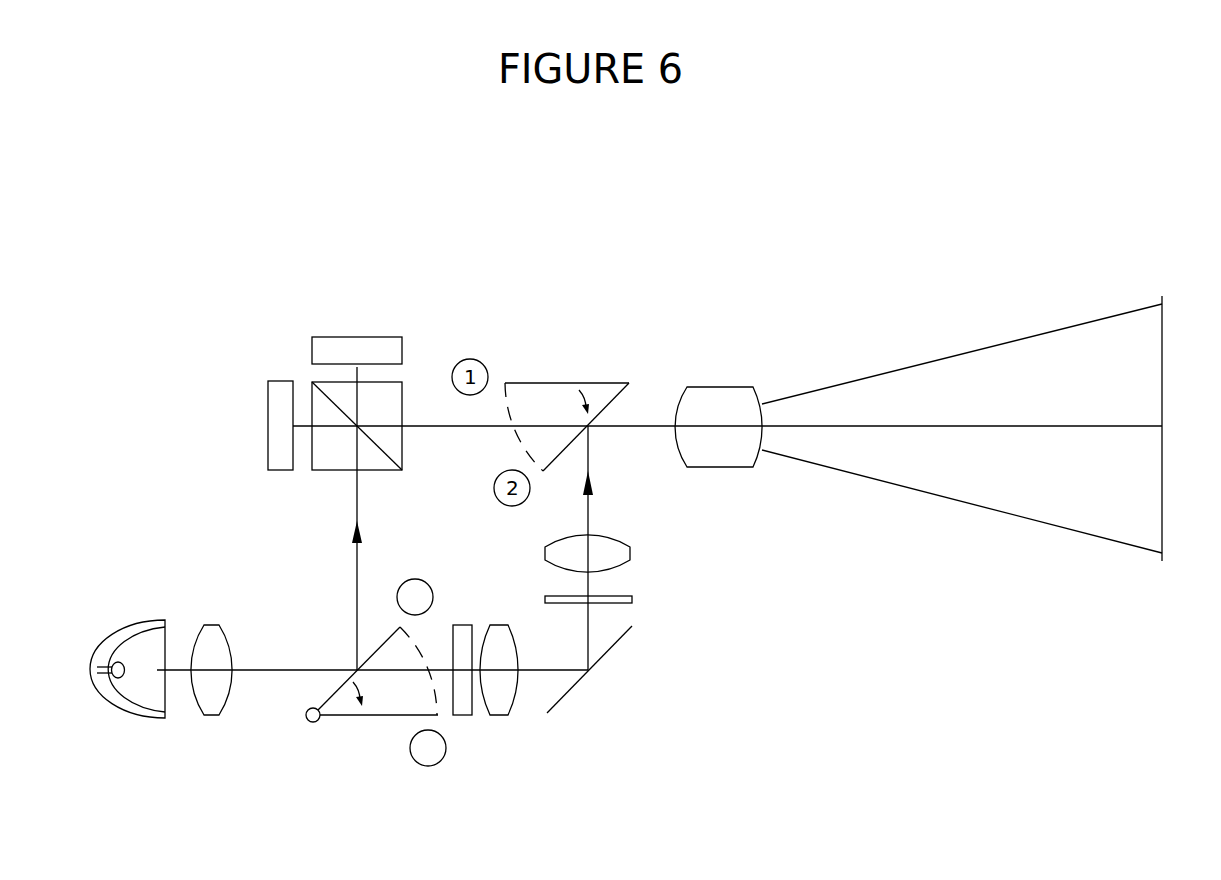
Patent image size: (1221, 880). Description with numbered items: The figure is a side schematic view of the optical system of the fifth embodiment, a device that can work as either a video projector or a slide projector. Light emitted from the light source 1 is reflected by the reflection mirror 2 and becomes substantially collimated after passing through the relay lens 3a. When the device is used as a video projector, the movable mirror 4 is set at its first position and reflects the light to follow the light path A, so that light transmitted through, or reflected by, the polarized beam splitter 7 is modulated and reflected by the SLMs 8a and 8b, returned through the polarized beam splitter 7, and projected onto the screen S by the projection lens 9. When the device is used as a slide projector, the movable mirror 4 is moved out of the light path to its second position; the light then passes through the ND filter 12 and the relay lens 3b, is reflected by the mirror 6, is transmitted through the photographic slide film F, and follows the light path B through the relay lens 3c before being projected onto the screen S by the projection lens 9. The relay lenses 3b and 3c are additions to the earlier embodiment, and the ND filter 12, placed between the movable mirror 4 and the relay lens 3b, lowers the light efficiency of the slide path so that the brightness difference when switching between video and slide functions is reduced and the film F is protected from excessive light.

The light source 1 is at (121, 662).
The reflection mirror 2 is at (134, 718).
The relay lens 3a is at (210, 697).
The relay lens 3b is at (502, 697).
The relay lens 3c is at (627, 550).
The movable mirror 4 is at (383, 716).
The mirror 6 is at (573, 690).
The polarized beam splitter 7 is at (342, 390).
The SLM 8a is at (280, 392).
The SLM 8b is at (383, 345).
The projection lens 9 is at (700, 398).
The ND filter 12 is at (458, 716).
The photographic (slide) film F is at (632, 600).
The screen S is at (1158, 531).
The light path A is at (366, 539).
The light path B is at (577, 488).